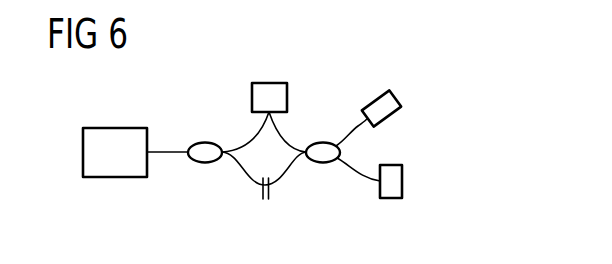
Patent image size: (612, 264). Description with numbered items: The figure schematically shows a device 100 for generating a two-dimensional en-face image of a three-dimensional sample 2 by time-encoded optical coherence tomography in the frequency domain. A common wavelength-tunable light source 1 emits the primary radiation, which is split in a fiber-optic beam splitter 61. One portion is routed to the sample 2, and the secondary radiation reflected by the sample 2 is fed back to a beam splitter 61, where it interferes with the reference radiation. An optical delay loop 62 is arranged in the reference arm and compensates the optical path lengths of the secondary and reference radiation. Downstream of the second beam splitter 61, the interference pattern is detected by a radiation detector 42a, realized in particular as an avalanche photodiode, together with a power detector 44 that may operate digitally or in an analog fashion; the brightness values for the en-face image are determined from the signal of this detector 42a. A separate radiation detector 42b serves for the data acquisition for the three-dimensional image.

The device 100 is at (445, 60).
The wavelength-tunable light source 1 is at (83, 153).
The beam splitter 61 is at (207, 142).
The sample 2 is at (287, 97).
The optical delay loop 62 is at (288, 202).
The radiation detector 42a is at (402, 100).
The power detector 44 is at (433, 108).
The separate radiation detector 42b is at (402, 184).